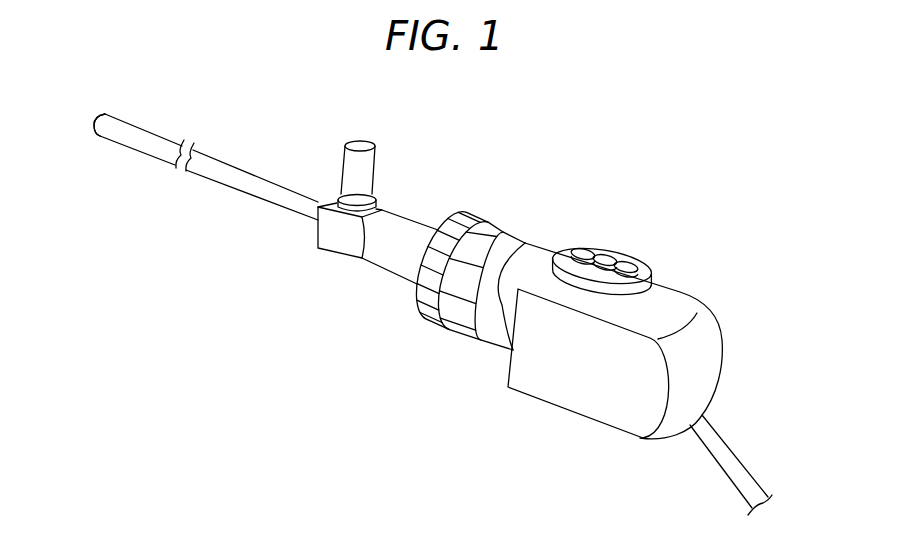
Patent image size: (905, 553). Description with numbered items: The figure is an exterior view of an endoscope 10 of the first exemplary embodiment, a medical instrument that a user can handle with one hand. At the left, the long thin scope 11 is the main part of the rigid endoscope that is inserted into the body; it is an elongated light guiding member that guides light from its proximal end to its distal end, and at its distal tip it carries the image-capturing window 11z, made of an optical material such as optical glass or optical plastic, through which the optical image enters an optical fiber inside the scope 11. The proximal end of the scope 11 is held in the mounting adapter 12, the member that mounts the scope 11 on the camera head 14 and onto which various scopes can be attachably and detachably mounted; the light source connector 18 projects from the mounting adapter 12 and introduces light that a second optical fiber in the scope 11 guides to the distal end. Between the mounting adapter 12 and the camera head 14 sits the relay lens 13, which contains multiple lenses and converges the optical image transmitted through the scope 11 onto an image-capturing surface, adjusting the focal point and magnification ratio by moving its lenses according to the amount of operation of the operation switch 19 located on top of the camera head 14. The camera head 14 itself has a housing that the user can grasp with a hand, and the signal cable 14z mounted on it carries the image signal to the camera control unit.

The endoscope 10 is at (537, 116).
The scope 11 is at (212, 157).
The image-capturing window 11z is at (97, 113).
The mounting adapter 12 is at (330, 243).
The relay lens 13 is at (502, 264).
The camera head 14 is at (679, 313).
The signal cable 14z is at (725, 468).
The light source connector 18 is at (363, 173).
The operation switch 19 is at (603, 249).